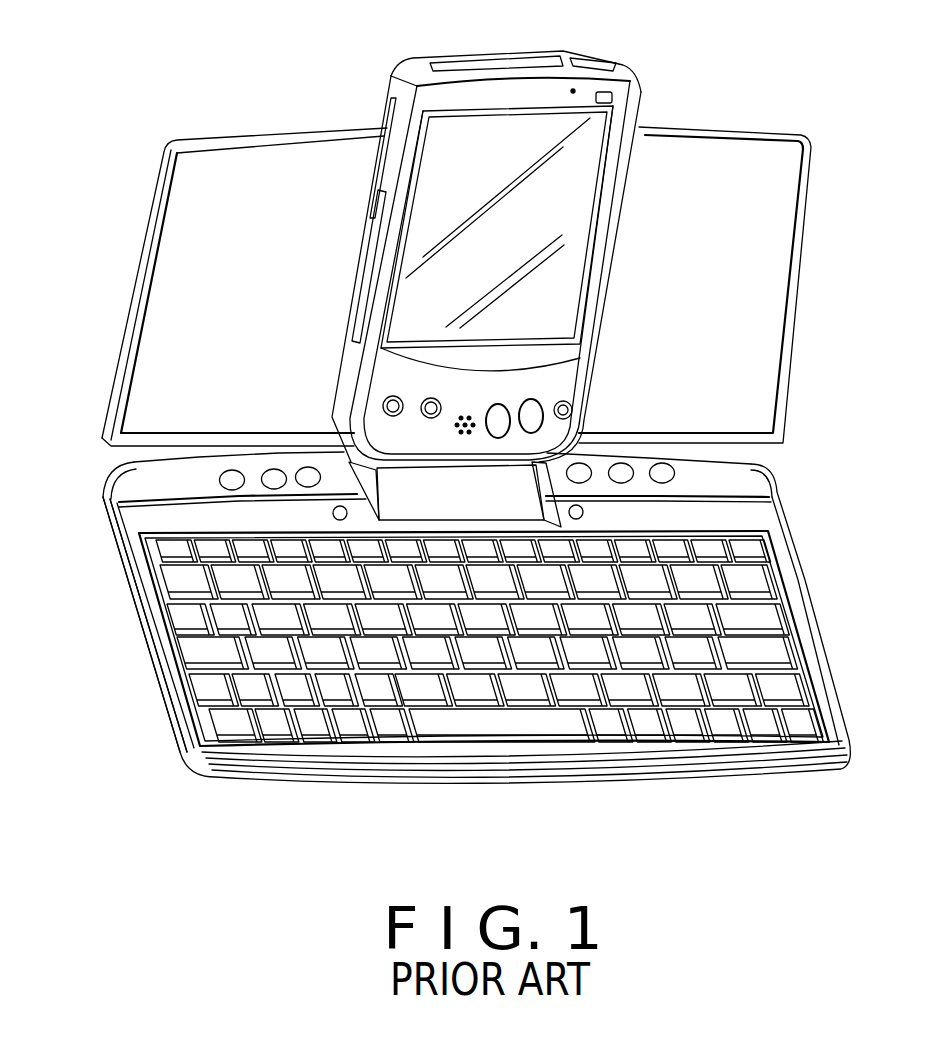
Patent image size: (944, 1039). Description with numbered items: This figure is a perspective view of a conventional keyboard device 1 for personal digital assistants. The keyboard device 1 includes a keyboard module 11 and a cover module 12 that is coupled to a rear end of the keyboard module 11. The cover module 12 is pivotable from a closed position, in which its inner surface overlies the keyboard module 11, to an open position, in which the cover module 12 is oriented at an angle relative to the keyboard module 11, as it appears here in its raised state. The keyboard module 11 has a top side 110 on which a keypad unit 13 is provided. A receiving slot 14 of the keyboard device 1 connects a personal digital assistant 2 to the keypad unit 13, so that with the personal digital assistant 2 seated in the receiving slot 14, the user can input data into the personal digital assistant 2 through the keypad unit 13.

The keyboard device 1 is at (463, 619).
The personal digital assistant 2 is at (403, 79).
The keyboard module 11 is at (800, 768).
The top side 110 is at (162, 623).
The cover module 12 is at (292, 174).
The keypad unit 13 is at (776, 647).
The receiving slot 14 is at (324, 463).